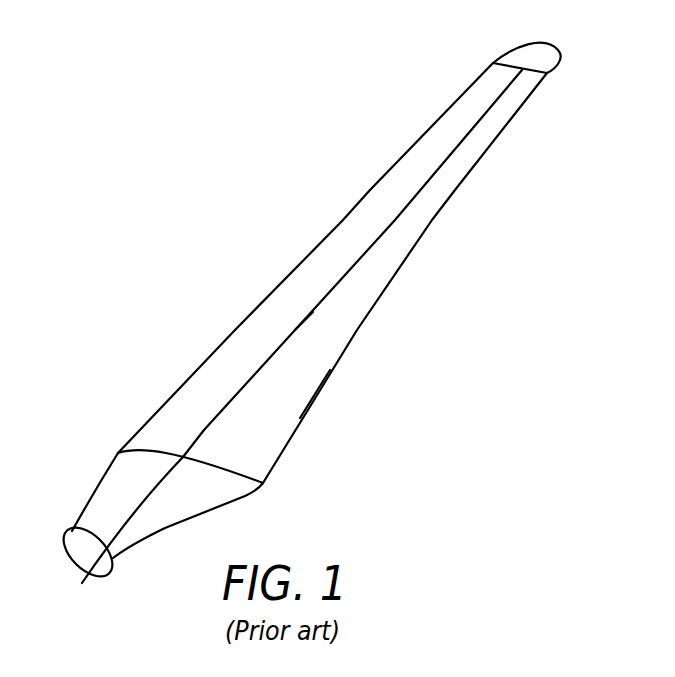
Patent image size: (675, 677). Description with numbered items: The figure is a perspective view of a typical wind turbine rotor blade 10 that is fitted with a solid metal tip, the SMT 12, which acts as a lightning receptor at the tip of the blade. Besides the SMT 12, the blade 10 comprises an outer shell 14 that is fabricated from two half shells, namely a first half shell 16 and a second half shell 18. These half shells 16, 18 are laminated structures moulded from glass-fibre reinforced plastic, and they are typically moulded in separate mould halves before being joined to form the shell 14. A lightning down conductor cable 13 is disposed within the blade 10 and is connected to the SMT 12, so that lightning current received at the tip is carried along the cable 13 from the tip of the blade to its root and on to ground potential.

The wind turbine rotor blade 10 is at (255, 249).
The SMT 12 is at (522, 55).
The lightning down conductor cable 13 is at (312, 313).
The outer shell 14 is at (405, 258).
The first half shell 16 is at (299, 397).
The second half shell 18 is at (73, 543).